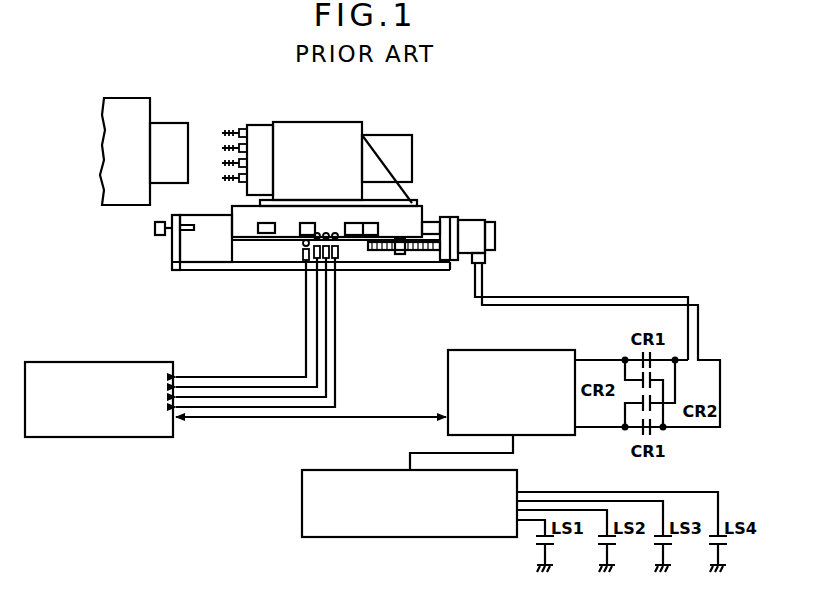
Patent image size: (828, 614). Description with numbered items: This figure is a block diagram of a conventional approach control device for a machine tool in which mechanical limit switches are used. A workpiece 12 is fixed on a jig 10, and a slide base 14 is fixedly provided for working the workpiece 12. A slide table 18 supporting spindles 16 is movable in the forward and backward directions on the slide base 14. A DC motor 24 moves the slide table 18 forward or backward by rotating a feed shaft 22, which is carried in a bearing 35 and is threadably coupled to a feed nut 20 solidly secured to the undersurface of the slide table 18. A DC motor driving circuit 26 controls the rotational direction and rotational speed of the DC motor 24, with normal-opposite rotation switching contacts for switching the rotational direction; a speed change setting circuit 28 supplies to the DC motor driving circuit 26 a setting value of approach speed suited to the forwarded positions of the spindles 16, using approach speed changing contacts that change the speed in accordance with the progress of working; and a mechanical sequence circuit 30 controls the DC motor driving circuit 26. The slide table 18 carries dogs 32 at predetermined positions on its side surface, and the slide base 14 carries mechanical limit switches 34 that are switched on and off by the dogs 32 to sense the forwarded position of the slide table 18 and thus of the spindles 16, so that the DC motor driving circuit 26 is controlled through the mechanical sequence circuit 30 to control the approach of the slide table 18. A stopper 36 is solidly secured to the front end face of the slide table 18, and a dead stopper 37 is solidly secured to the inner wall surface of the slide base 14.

The jig 10 is at (128, 110).
The workpiece 12 is at (178, 128).
The slide base 14 is at (176, 258).
The spindles 16 is at (232, 133).
The slide table 18 is at (232, 205).
The feed nut 20 is at (398, 256).
The feed shaft 22 is at (422, 252).
The DC motor 24 is at (478, 218).
The DC motor driving circuit 26 is at (448, 362).
The speed change setting circuit 28 is at (302, 512).
The mechanical sequence circuit 30 is at (133, 361).
The dogs 32 is at (378, 222).
The mechanical limit switches 34 is at (302, 255).
The bearing 35 is at (450, 217).
The stopper 36 is at (222, 228).
The dead stopper 37 is at (188, 230).